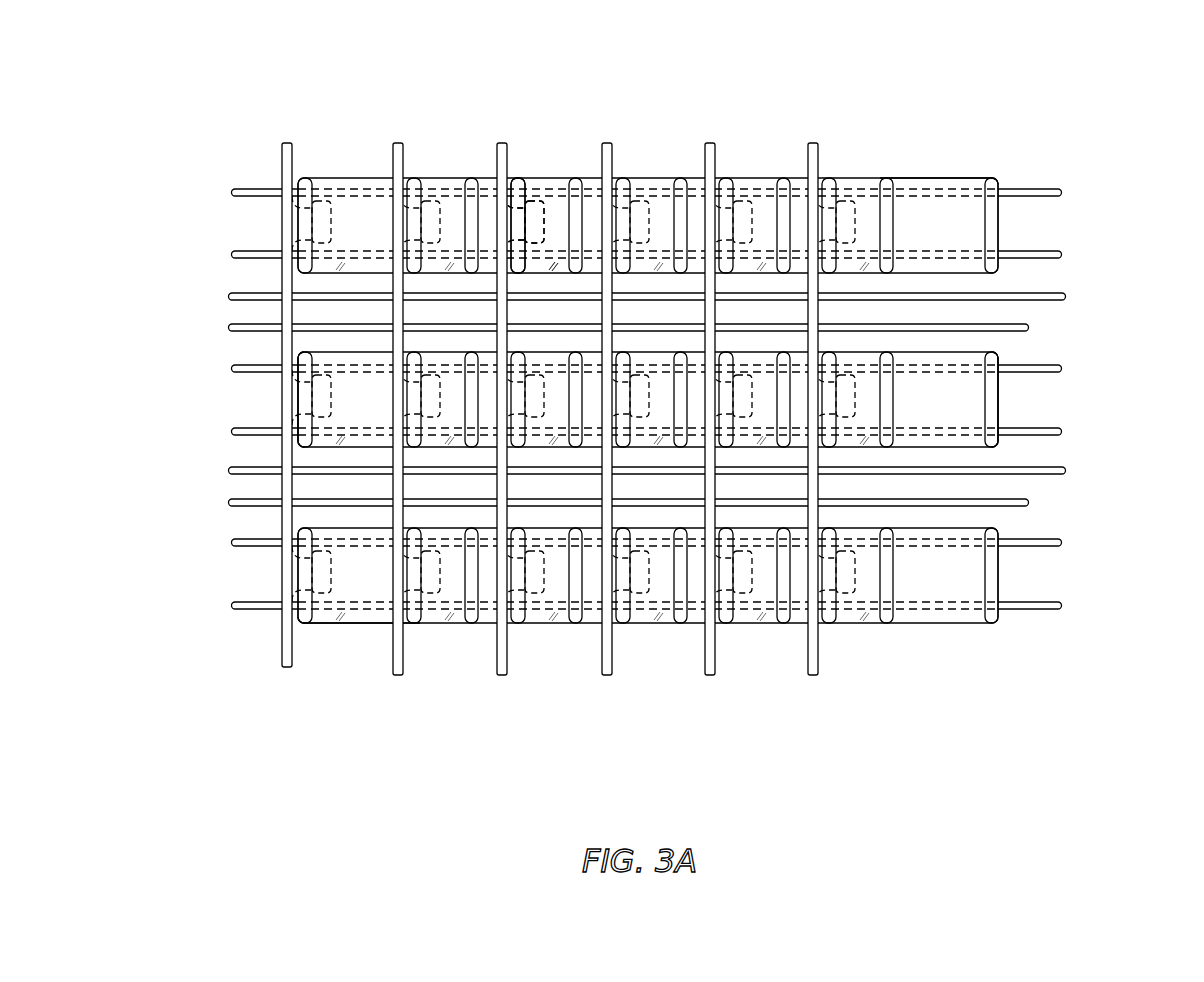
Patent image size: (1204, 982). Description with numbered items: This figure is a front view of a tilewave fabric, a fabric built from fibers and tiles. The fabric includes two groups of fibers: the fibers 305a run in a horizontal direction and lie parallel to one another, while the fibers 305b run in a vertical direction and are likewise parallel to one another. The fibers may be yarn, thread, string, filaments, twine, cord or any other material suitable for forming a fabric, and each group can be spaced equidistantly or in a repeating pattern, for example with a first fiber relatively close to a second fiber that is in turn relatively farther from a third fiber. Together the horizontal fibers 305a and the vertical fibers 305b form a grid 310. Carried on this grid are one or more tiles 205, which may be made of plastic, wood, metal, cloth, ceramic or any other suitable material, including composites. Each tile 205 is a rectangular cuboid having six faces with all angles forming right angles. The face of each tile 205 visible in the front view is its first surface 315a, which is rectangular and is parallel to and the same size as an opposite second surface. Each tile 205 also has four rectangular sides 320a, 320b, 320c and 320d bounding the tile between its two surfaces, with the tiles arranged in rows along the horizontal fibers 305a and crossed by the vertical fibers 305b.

The tile 205 is at (558, 212).
The fibers 305a is at (221, 198).
The fibers 305b is at (387, 136).
The grid 310 is at (646, 385).
The first surface 315a is at (973, 573).
The side 320a is at (289, 401).
The side 320b is at (357, 641).
The side 320c is at (1008, 401).
The side 320d is at (937, 160).